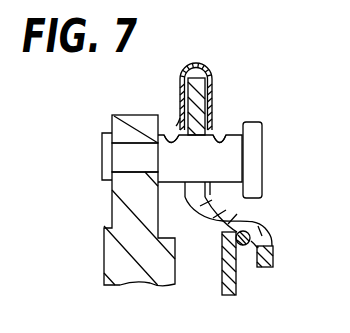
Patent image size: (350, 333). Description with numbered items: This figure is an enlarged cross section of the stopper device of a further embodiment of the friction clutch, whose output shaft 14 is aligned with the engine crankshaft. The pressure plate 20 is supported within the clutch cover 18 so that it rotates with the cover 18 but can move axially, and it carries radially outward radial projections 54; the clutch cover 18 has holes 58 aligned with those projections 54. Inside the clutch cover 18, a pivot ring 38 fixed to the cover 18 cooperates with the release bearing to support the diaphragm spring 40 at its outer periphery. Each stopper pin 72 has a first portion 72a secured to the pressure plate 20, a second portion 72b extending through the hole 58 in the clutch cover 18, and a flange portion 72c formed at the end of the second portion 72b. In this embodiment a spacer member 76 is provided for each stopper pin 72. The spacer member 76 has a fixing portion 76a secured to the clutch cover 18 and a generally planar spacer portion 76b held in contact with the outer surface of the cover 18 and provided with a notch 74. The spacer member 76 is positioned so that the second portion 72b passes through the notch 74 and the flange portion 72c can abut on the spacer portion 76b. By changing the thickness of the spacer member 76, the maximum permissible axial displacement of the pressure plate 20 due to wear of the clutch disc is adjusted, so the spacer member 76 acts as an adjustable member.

The output shaft 14 is at (291, 5).
The clutch cover 18 is at (273, 252).
The pressure plate 20 is at (112, 253).
The pivot ring 38 is at (244, 229).
The diaphragm spring 40 is at (231, 283).
The radial projection 54 is at (122, 120).
The hole 58 is at (172, 130).
The stopper pin 72 is at (186, 211).
The first portion 72a is at (120, 158).
The second portion 72b is at (233, 168).
The flange portion 72c is at (257, 132).
The notch 74 is at (222, 135).
The spacer member 76 is at (211, 80).
The fixing portion 76a is at (180, 82).
The generally planar spacer portion 76b is at (212, 80).